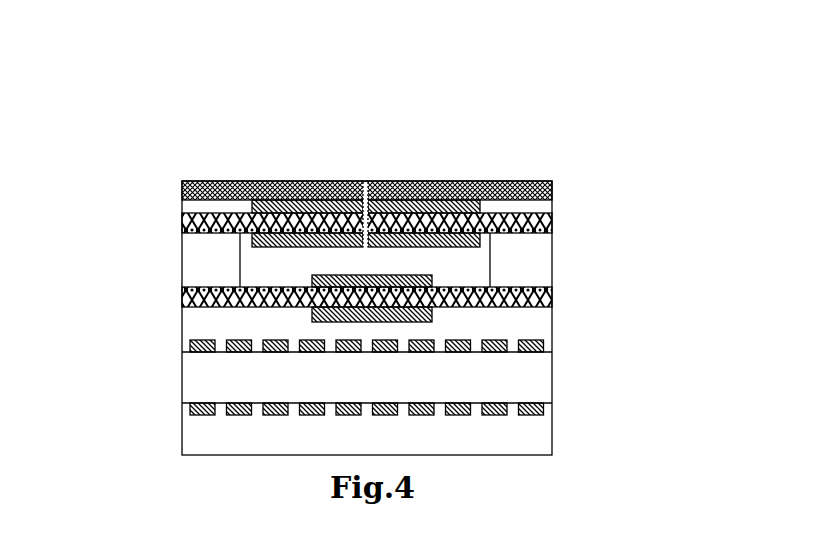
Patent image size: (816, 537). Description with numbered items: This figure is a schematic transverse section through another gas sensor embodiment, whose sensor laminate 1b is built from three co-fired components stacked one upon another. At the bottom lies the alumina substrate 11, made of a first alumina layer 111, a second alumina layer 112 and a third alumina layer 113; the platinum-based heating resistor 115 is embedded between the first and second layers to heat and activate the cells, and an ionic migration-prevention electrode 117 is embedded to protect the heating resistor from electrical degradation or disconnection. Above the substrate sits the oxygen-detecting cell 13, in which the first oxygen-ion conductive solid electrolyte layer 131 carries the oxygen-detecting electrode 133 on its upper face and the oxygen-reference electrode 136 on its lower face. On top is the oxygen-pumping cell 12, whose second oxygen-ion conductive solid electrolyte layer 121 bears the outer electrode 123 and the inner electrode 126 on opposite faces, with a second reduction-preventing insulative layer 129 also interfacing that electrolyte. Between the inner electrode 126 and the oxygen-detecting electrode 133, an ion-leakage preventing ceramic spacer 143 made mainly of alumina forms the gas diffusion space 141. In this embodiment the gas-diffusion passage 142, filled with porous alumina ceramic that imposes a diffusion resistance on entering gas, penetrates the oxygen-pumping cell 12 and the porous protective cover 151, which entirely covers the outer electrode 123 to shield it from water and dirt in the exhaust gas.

The sensor laminate 1b is at (563, 135).
The alumina substrate 11 is at (688, 358).
The first alumina layer 111 is at (505, 333).
The second alumina layer 112 is at (530, 382).
The third alumina layer 113 is at (543, 435).
The heating resistor 115 is at (187, 342).
The ionic migration-prevention electrode 117 is at (187, 405).
The oxygen-pumping cell 12 is at (673, 155).
The second oxygen-ion conductive solid electrolyte layer 121 is at (480, 206).
The outer electrode 123 is at (443, 220).
The inner electrode 126 is at (455, 248).
The second reduction-preventing insulative layer 129 is at (250, 203).
The oxygen-detecting cell 13 is at (688, 258).
The first oxygen-ion conductive solid electrolyte layer 131 is at (432, 290).
The oxygen-detecting electrode 133 is at (432, 277).
The oxygen-reference electrode 136 is at (432, 318).
The gas diffusion space 141 is at (310, 257).
The gas-diffusion passage 142 is at (358, 243).
The ion-leakage preventing ceramic spacer 143 is at (187, 265).
The porous protective cover 151 is at (181, 181).